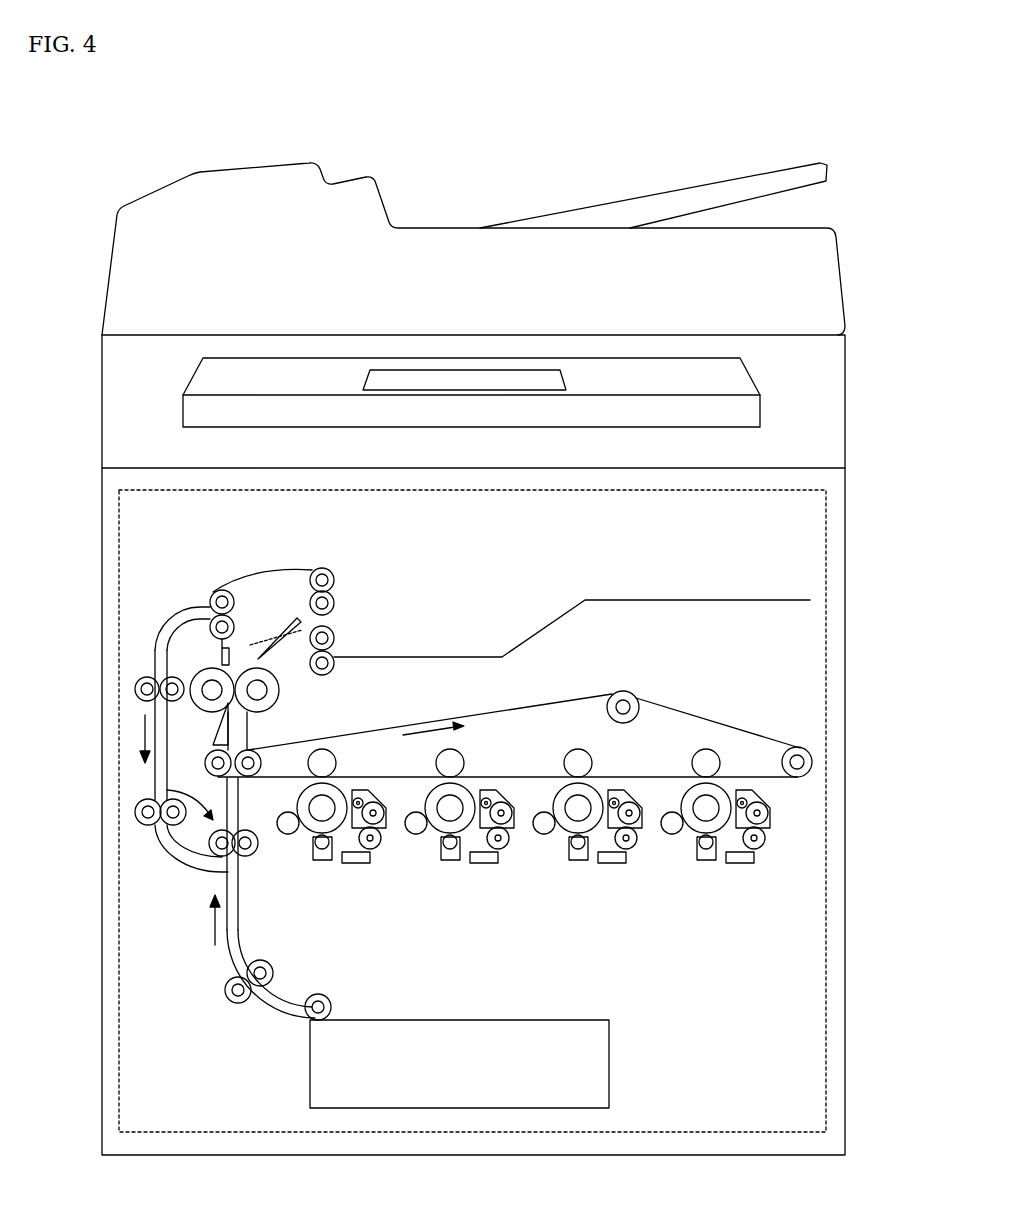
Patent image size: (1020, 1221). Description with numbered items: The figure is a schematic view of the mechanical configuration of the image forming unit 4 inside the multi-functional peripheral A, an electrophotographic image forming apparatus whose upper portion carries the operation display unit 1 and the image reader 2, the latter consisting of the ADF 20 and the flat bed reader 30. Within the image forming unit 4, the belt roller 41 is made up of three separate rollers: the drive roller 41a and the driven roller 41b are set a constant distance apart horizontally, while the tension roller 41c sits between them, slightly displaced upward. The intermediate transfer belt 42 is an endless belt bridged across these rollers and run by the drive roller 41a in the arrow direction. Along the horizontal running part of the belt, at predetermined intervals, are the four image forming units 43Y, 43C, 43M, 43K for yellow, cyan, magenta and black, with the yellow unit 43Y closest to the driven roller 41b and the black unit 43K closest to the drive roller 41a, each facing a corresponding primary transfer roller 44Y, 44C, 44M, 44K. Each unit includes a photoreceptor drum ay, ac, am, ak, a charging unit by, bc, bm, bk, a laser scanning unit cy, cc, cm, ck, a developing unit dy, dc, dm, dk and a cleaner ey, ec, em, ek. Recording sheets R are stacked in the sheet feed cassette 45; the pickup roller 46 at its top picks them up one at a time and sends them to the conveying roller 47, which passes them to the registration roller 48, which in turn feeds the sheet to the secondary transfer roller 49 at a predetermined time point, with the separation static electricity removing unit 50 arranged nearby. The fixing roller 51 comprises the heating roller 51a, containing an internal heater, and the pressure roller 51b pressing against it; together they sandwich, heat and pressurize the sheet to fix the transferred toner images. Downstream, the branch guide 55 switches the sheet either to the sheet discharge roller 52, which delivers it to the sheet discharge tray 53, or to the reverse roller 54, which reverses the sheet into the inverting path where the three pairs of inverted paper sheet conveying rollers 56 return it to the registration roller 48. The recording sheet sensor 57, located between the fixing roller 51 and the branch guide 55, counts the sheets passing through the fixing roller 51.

The multi-functional peripheral A is at (697, 120).
The operation display unit 1 is at (753, 374).
The image reader 2 is at (254, 165).
The automatic document feeder (ADF) 20 is at (450, 245).
The flat bed reader 30 is at (846, 410).
The image forming unit 4 is at (828, 553).
The belt roller 41 is at (508, 697).
The drive roller 41a is at (276, 758).
The driven roller 41b is at (780, 757).
The tension roller 41c is at (640, 712).
The intermediate transfer belt 42 is at (452, 726).
The image forming unit (black) 43K is at (343, 874).
The image forming unit (magenta) 43M is at (475, 874).
The image forming unit (cyan) 43C is at (598, 874).
The image forming unit (yellow) 43Y is at (732, 890).
The primary transfer roller (black) 44K is at (347, 757).
The primary transfer roller (magenta) 44M is at (475, 757).
The primary transfer roller (cyan) 44C is at (553, 757).
The primary transfer roller (yellow) 44Y is at (705, 750).
The sheet feed cassette 45 is at (609, 1063).
The pickup roller 46 is at (318, 993).
The conveying roller 47 is at (223, 983).
The registration roller 48 is at (152, 795).
The secondary transfer roller 49 is at (200, 777).
The separation static electricity removing unit 50 is at (215, 733).
The fixing roller 51 is at (204, 673).
The heating roller 51a is at (280, 688).
The pressure roller 51b is at (172, 668).
The sheet discharge roller 52 is at (335, 638).
The sheet discharge tray 53 is at (458, 655).
The reverse roller 54 is at (335, 582).
The branch guide 55 is at (283, 617).
The inverted paper sheet conveying rollers 56 is at (213, 592).
The recording sheet sensor 57 is at (232, 652).
The recording sheet R is at (237, 925).
The cleaner (black) ek is at (288, 835).
The photoreceptor drum (black) ak is at (310, 838).
The charging unit (black) bk is at (323, 862).
The laser scanning unit (black) ck is at (357, 865).
The developing unit (black) dk is at (385, 806).
The cleaner (magenta) em is at (416, 835).
The photoreceptor drum (magenta) am is at (438, 838).
The charging unit (magenta) bm is at (451, 862).
The laser scanning unit (magenta) cm is at (485, 865).
The developing unit (magenta) dm is at (513, 806).
The cleaner (cyan) ec is at (544, 835).
The photoreceptor drum (cyan) ac is at (566, 838).
The charging unit (cyan) bc is at (579, 862).
The laser scanning unit (cyan) cc is at (613, 865).
The developing unit (cyan) dc is at (641, 806).
The cleaner (yellow) ey is at (672, 835).
The photoreceptor drum (yellow) ay is at (694, 838).
The charging unit (yellow) by is at (707, 862).
The laser scanning unit (yellow) cy is at (741, 865).
The developing unit (yellow) dy is at (768, 815).